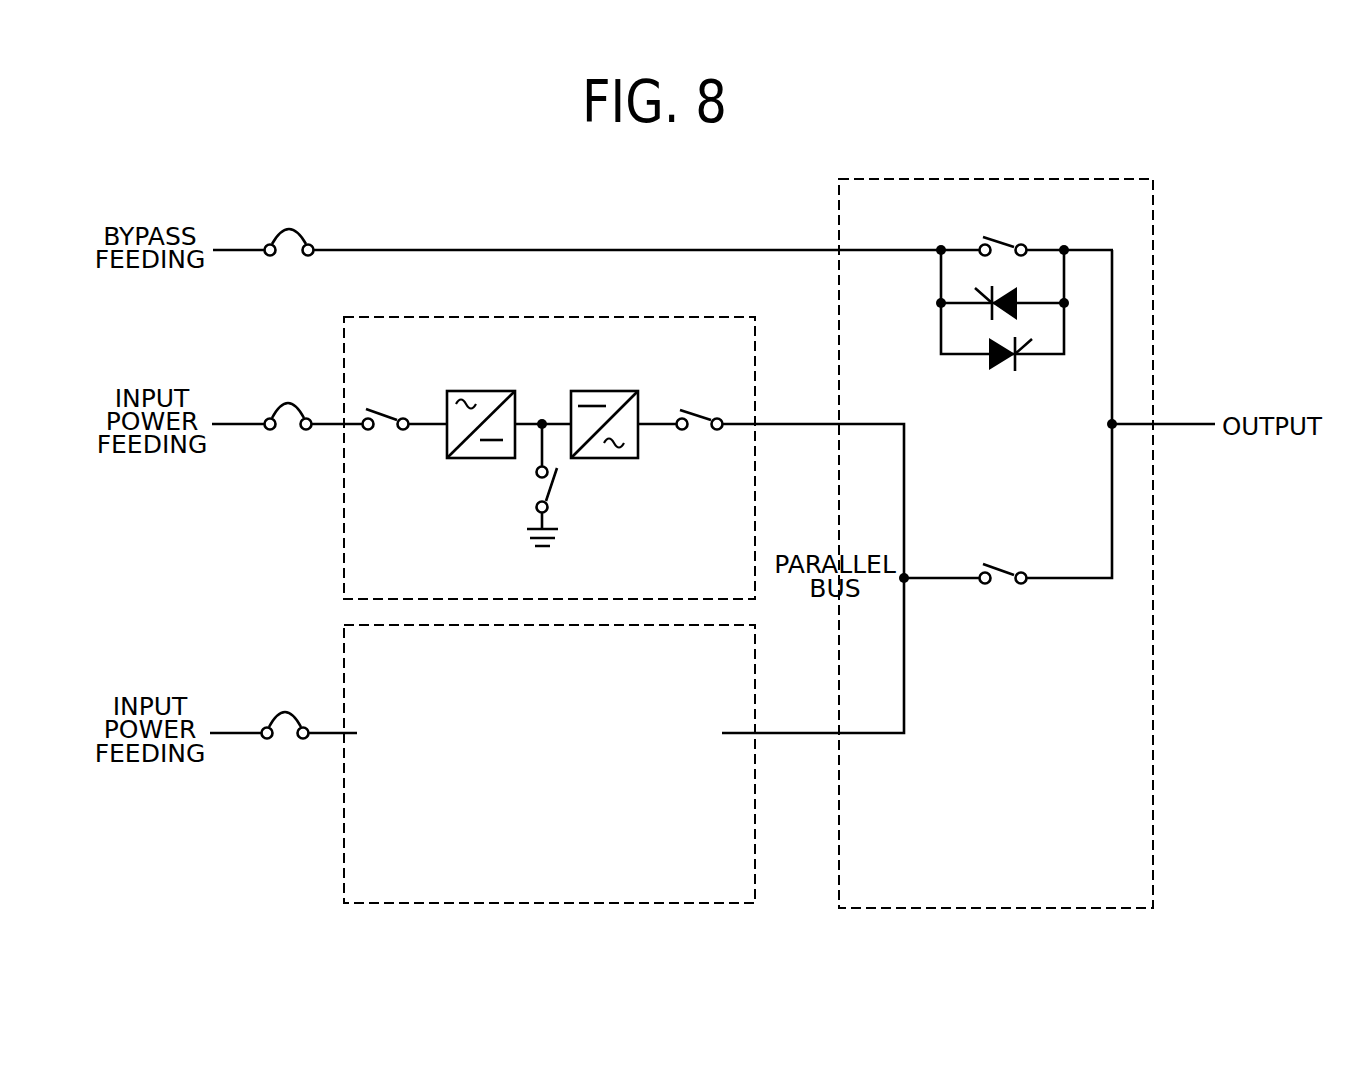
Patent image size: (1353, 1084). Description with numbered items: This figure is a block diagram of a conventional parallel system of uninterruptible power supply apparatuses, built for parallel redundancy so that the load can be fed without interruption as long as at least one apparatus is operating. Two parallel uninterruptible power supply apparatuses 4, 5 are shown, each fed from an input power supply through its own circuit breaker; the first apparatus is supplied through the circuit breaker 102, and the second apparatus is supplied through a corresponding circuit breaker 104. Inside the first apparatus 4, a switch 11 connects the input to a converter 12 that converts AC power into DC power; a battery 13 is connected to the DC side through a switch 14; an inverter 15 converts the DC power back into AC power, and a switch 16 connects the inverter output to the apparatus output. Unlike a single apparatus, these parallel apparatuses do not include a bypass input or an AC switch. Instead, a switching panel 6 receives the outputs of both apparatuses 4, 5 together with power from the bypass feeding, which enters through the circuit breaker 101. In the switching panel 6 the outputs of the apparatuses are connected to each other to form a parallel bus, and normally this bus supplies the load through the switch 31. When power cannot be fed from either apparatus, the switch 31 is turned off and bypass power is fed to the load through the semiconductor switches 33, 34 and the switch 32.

The parallel uninterruptible power supply apparatus 4 is at (343, 348).
The parallel uninterruptible power supply apparatus 5 is at (343, 652).
The switching panel 6 is at (838, 210).
The switch 11 is at (383, 437).
The converter 12 is at (455, 460).
The battery 13 is at (525, 538).
The switch 14 is at (557, 487).
The inverter 15 is at (627, 460).
The switch 16 is at (701, 437).
The switch 31 is at (1000, 592).
The switch 32 is at (1001, 237).
The semiconductor switch 33 is at (1017, 295).
The semiconductor switch 34 is at (992, 365).
The circuit breaker 101 is at (290, 258).
The circuit breaker 102 is at (289, 432).
The input power feeding circuit breaker 104 is at (286, 741).